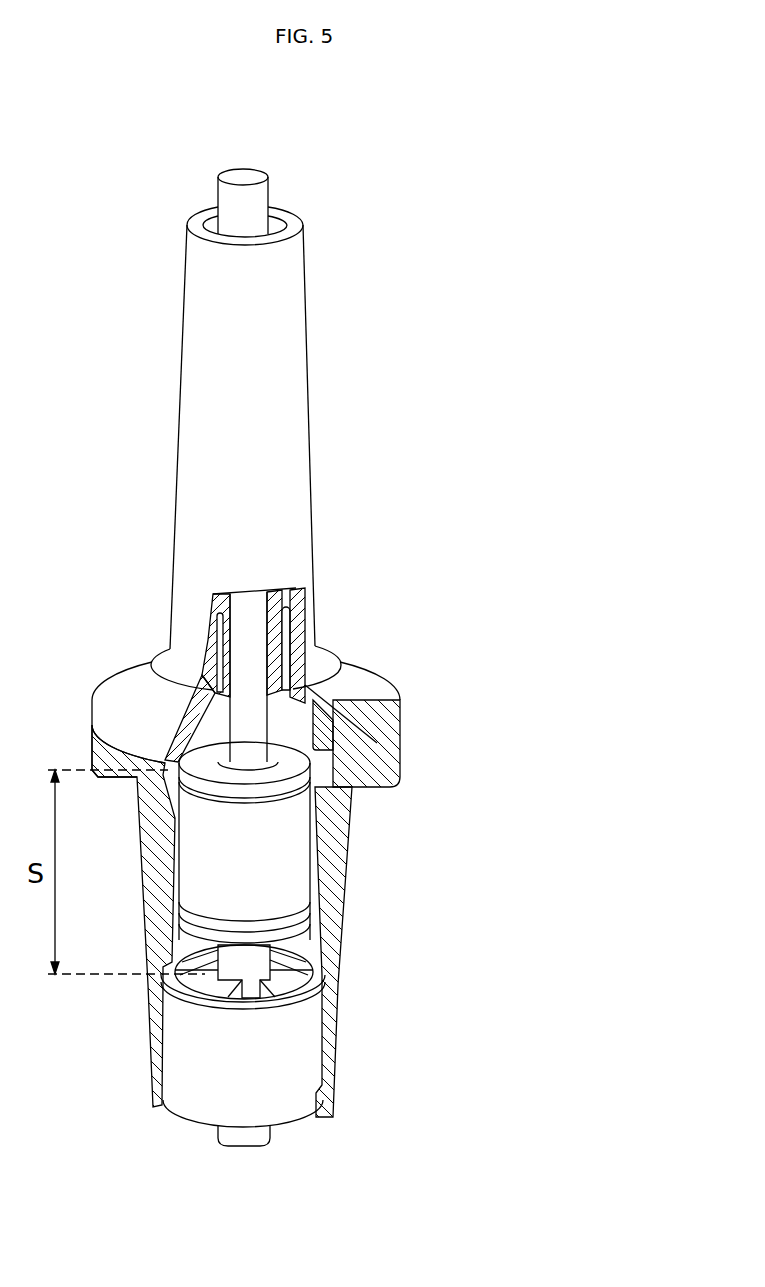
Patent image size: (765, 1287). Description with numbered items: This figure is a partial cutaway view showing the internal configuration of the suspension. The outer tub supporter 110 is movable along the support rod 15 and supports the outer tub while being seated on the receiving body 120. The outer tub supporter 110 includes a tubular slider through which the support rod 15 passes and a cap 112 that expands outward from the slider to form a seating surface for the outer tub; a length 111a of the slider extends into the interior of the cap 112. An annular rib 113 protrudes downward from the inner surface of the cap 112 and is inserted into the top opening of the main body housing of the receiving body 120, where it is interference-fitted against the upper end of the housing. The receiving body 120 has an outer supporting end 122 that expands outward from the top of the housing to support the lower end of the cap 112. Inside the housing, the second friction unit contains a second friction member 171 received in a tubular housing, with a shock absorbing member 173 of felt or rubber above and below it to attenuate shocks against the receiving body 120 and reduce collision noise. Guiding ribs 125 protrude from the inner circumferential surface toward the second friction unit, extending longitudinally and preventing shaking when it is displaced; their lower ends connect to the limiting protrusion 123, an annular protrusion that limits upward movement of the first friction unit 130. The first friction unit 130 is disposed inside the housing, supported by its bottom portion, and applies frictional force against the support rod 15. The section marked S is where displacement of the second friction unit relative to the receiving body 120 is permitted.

The support rod 15 is at (258, 200).
The outer tub supporter 110 is at (282, 417).
The length of slider extending to the interior of the cap 111a is at (273, 628).
The cap 112 is at (342, 630).
The annular rib 113 is at (365, 715).
The outer supporting end 122 is at (393, 753).
The shock absorbing member 173 is at (283, 785).
The second friction member 171 is at (277, 848).
The guiding ribs 125 is at (157, 888).
The limiting protrusion 123 is at (310, 972).
The receiving body 120 is at (301, 921).
The first friction unit 130 is at (272, 1092).